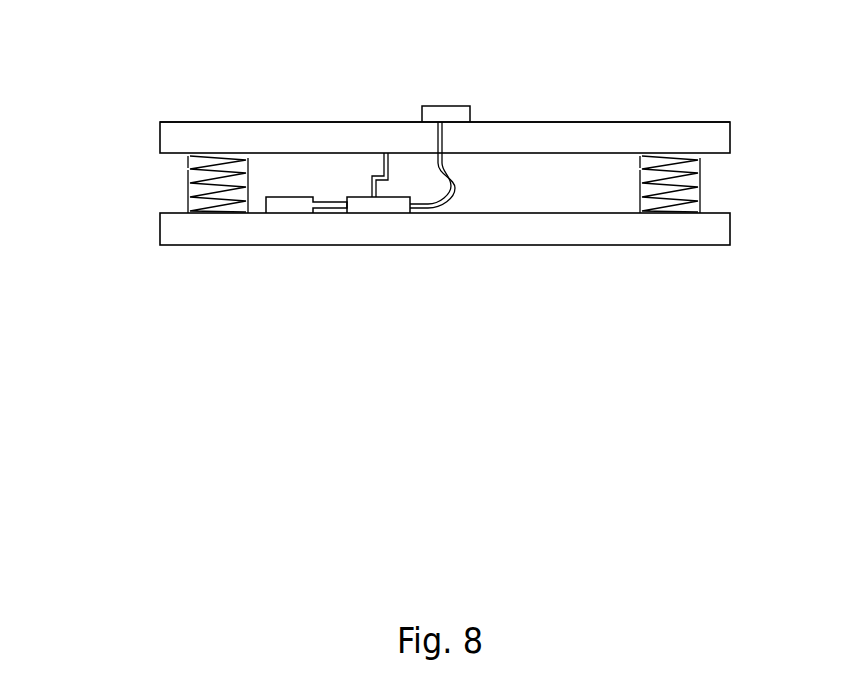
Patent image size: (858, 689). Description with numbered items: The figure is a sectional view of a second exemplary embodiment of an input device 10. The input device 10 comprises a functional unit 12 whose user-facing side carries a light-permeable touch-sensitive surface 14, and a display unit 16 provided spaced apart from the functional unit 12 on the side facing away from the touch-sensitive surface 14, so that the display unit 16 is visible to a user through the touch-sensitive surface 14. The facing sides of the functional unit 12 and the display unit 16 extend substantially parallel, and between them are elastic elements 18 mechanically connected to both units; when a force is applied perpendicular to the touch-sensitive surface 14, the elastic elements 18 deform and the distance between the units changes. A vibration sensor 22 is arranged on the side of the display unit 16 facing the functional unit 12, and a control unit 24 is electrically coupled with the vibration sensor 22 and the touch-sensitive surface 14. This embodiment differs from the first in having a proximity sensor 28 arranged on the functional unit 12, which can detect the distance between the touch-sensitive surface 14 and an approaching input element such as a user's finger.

The input device 10 is at (140, 91).
The functional unit 12 is at (180, 142).
The touch-sensitive surface 14 is at (248, 122).
The display unit 16 is at (173, 229).
The elastic elements 18 is at (190, 184).
The vibration sensor 22 is at (282, 203).
The control unit 24 is at (375, 203).
The proximity sensor 28 is at (453, 117).